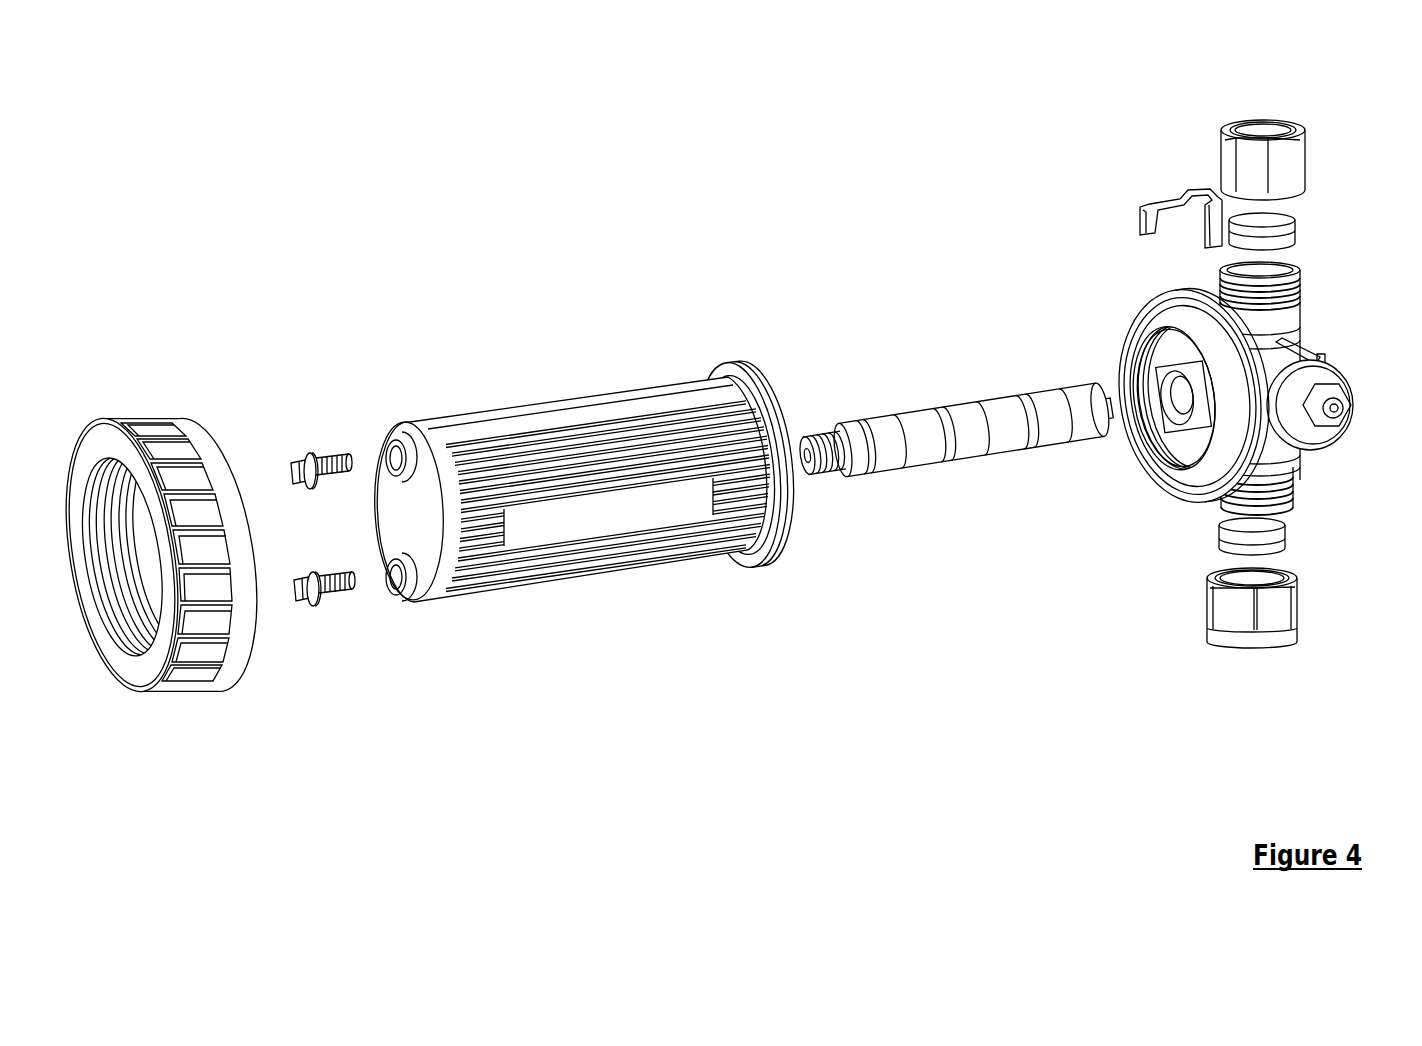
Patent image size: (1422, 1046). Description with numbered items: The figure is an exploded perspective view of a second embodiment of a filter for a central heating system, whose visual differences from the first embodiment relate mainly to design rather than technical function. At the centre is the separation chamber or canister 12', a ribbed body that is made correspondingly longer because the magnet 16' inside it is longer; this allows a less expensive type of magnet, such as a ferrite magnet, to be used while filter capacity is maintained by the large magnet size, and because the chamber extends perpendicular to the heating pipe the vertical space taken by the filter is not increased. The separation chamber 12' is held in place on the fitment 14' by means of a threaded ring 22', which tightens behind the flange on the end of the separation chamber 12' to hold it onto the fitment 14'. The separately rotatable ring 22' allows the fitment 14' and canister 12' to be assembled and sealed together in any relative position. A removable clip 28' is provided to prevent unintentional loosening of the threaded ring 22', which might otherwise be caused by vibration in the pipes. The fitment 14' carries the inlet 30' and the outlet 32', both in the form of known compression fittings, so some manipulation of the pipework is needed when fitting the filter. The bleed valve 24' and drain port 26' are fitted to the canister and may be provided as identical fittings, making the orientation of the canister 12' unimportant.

The separation chamber/canister 12' is at (587, 440).
The fitment 14' is at (1191, 362).
The magnet 16' is at (956, 383).
The threaded ring 22' is at (153, 490).
The bleed valve 24' is at (293, 405).
The drain port 26' is at (338, 671).
The removable clip 28' is at (1148, 177).
The inlet 30' is at (1312, 580).
The outlet 32' is at (1317, 193).